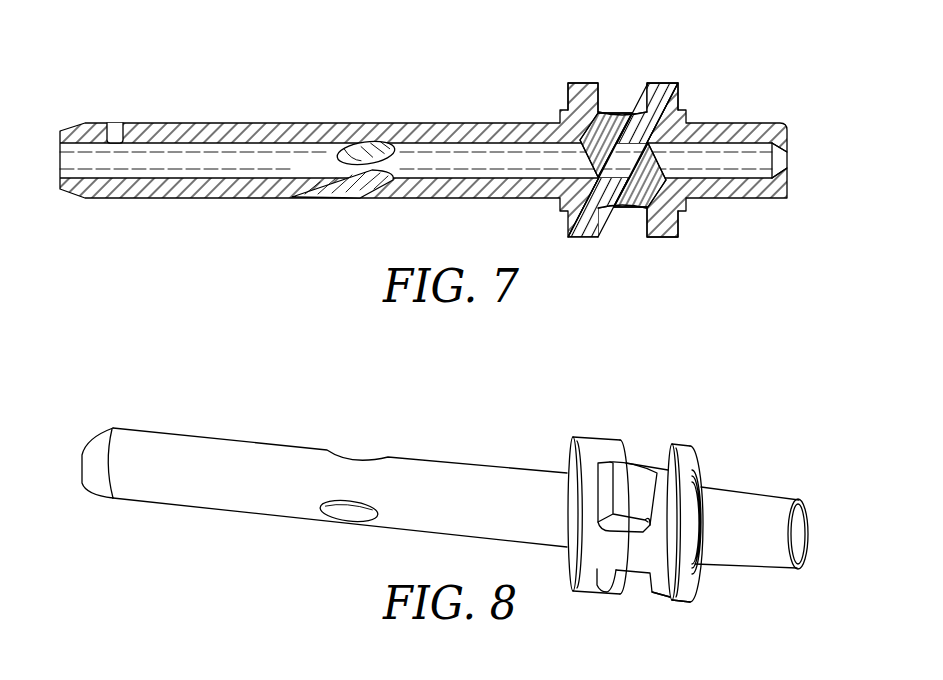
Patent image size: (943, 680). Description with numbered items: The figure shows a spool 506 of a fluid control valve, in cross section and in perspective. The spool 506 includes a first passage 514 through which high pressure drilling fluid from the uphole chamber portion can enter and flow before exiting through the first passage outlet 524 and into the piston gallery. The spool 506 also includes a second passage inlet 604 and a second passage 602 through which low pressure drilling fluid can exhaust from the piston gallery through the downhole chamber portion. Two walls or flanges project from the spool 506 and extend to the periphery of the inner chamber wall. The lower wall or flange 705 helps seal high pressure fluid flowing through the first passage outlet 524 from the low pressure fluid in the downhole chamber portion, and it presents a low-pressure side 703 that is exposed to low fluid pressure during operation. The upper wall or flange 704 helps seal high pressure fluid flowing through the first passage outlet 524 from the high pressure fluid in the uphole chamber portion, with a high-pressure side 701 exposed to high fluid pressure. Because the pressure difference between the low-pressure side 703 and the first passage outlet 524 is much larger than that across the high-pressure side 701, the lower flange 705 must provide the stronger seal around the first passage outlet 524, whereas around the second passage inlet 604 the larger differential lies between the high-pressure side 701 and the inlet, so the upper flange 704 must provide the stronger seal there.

In FIG. 7, the spool 506 is at (260, 124).
In FIG. 8, the spool 506 is at (190, 448).
In FIG. 7, the first passage 514 is at (447, 163).
In FIG. 7, the second passage 602 is at (766, 163).
In FIG. 8, the second passage 602 is at (751, 528).
In FIG. 7, the second passage inlet 604 is at (623, 216).
In FIG. 8, the second passage inlet 604 is at (606, 580).
In FIG. 7, the high-pressure side 701 is at (567, 96).
In FIG. 8, the high-pressure side 701 is at (577, 458).
In FIG. 7, the low-pressure side 703 is at (678, 96).
In FIG. 8, the low-pressure side 703 is at (700, 462).
In FIG. 7, the upper wall or flange 704 is at (578, 83).
In FIG. 8, the upper wall or flange 704 is at (612, 437).
In FIG. 7, the lower wall or flange 705 is at (665, 237).
In FIG. 8, the lower wall or flange 705 is at (668, 598).
In FIG. 7, the first passage outlet 524 is at (623, 102).
In FIG. 8, the first passage outlet 524 is at (643, 454).